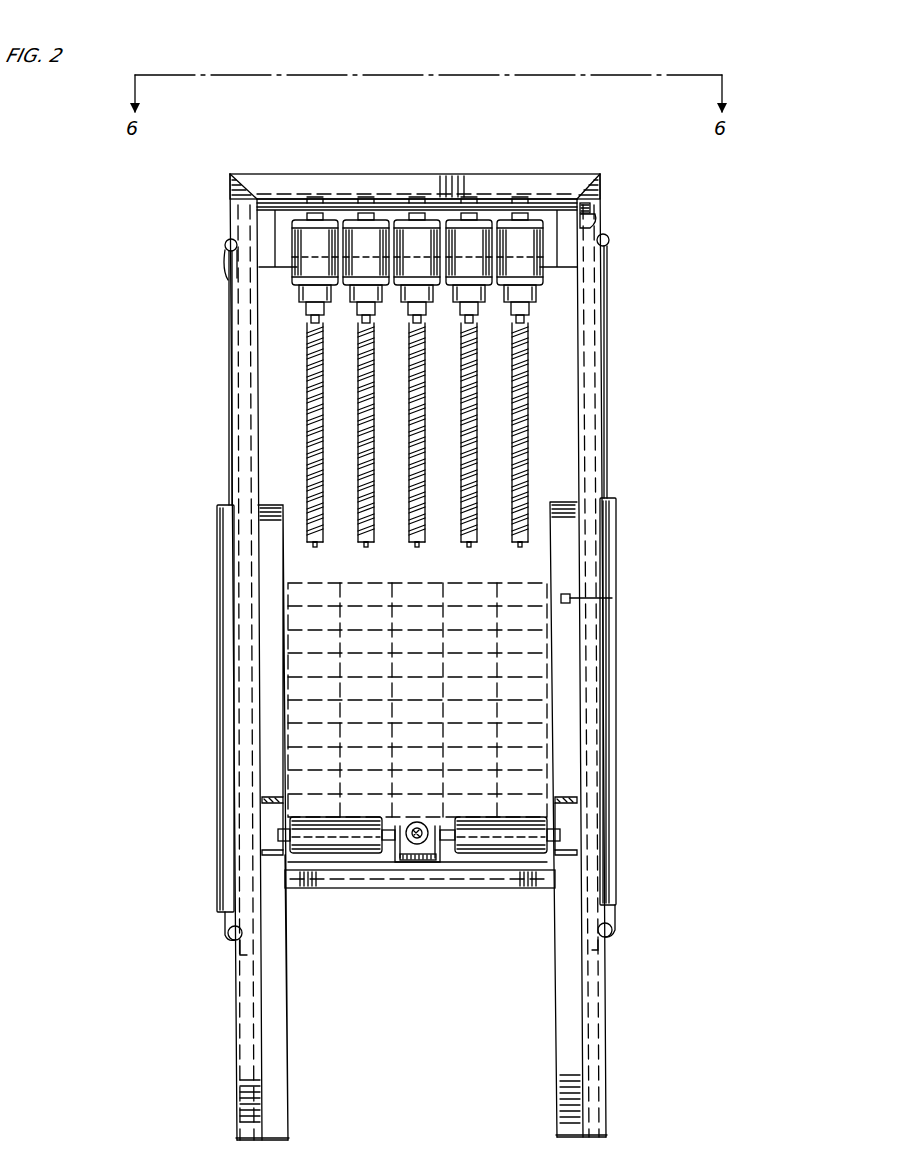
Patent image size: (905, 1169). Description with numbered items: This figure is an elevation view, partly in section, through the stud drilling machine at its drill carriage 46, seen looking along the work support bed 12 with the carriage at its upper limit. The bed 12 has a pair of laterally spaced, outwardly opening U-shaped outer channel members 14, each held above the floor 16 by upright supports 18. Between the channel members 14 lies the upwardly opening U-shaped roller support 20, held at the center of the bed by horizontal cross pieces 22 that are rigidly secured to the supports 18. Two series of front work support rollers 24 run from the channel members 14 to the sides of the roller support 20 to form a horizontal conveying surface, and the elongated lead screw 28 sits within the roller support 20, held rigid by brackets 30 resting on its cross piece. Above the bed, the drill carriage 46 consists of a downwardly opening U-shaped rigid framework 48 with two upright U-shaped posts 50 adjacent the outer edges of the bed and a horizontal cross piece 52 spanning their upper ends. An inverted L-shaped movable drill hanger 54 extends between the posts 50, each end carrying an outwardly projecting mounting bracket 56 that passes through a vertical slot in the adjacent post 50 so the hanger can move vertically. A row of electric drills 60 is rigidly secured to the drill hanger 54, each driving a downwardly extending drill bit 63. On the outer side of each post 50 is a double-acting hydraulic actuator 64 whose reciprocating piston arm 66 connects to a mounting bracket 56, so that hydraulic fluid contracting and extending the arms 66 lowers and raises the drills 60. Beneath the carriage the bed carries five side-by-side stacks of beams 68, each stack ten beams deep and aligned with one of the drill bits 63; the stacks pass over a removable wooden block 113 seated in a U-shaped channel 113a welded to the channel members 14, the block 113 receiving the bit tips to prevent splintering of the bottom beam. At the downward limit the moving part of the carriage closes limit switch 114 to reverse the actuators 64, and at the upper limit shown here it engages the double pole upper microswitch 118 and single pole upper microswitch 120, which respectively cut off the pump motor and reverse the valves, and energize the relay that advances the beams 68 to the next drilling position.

The work support bed 12 is at (345, 815).
The outer channel members 14 is at (278, 830).
The floor 16 is at (600, 1137).
The upright supports 18 is at (595, 1012).
The roller support 20 is at (396, 858).
The cross pieces 22 is at (536, 880).
The front work support rollers 24 is at (333, 855).
The lead screw 28 is at (420, 822).
The brackets 30 is at (432, 863).
The drill carriage 46 is at (440, 146).
The rigid framework 48 is at (604, 430).
The posts 50 is at (240, 365).
The cross piece 52 is at (508, 186).
The drill hanger 54 is at (383, 205).
The mounting bracket 56 is at (225, 245).
The electric drills 60 is at (322, 250).
The drill bit 63 is at (370, 412).
The hydraulic actuator 64 is at (220, 602).
The piston arm 66 is at (229, 297).
The beams 68 is at (350, 575).
The wooden block 113 is at (398, 818).
The channel 113a is at (440, 822).
The limit switch 114 is at (612, 598).
The double pole upper microswitch 118 is at (597, 199).
The single pole upper microswitch 120 is at (596, 224).